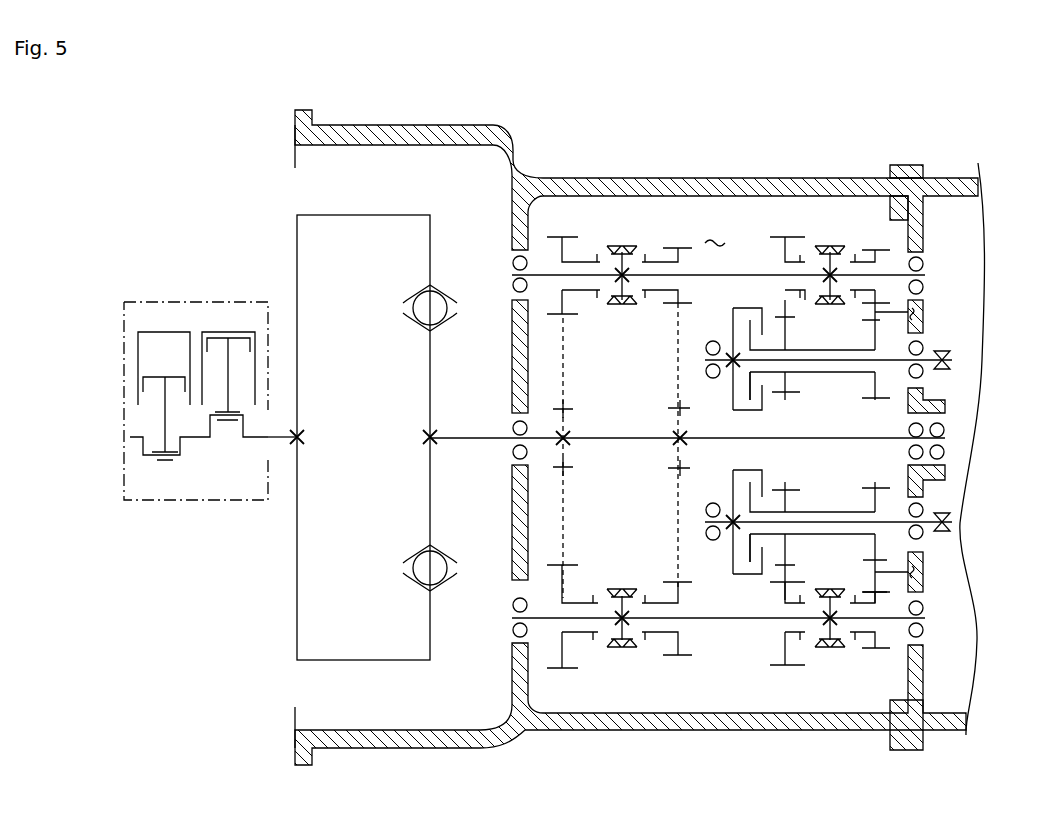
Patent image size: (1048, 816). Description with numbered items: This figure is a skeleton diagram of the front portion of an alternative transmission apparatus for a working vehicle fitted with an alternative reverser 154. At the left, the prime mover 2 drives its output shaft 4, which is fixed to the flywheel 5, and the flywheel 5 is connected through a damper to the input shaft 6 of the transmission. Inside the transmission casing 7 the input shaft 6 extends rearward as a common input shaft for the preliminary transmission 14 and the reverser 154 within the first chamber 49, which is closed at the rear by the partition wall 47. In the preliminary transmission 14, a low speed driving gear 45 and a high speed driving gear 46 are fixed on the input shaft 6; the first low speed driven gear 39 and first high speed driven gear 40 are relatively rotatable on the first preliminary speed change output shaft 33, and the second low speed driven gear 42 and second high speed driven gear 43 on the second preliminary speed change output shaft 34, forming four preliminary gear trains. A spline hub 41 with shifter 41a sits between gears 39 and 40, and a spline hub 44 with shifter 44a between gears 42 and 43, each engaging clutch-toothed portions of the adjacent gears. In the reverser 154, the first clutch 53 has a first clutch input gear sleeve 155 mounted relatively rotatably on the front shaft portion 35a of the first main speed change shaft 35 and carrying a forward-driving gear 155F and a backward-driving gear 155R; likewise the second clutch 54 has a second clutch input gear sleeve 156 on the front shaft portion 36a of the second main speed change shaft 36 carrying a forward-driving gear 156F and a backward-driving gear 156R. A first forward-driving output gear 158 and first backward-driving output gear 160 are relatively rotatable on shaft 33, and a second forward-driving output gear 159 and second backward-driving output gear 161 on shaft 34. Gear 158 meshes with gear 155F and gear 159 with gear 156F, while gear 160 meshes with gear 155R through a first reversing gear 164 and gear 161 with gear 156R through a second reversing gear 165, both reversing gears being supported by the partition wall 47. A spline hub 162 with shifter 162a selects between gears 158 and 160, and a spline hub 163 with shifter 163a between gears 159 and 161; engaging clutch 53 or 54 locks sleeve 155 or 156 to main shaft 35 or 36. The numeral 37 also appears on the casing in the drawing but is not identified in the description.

The prime mover 2 is at (253, 302).
The output shaft 4 is at (274, 440).
The flywheel 5 is at (407, 215).
The input shaft 6 is at (468, 440).
The transmission casing 7 is at (968, 180).
The preliminary transmission 14 is at (652, 225).
The first preliminary speed change output shaft 33 is at (545, 276).
The second preliminary speed change output shaft 34 is at (545, 618).
The first main speed change shaft 35 is at (697, 361).
The front shaft portion 35a is at (950, 357).
The second main speed change shaft 36 is at (697, 524).
The front shaft portion 36a is at (950, 528).
The bearing support 37 is at (966, 440).
The first low speed driven gear 39 is at (572, 237).
The first high speed driven gear 40 is at (688, 248).
The spline hub 41 is at (620, 268).
The shifter 41a is at (630, 247).
The second low speed driven gear 42 is at (558, 668).
The second high speed driven gear 43 is at (672, 655).
The spline hub 44 is at (620, 610).
The shifter 44a is at (628, 590).
The low speed driving gear 45 is at (570, 416).
The high speed driving gear 46 is at (668, 408).
The partition wall 47 is at (925, 680).
The first chamber 49 is at (715, 228).
The first clutch 53 is at (751, 301).
The second clutch 54 is at (752, 595).
The reverser 154 is at (876, 200).
The first clutch input gear sleeve 155 is at (753, 407).
The forward-driving gear 155F is at (800, 366).
The backward-driving gear 155R is at (869, 361).
The second clutch input gear sleeve 156 is at (751, 498).
The forward-driving gear 156F is at (801, 522).
The backward-driving gear 156R is at (871, 523).
The first forward-driving output gear 158 is at (780, 237).
The second forward-driving output gear 159 is at (784, 666).
The first backward-driving output gear 160 is at (875, 250).
The second backward-driving output gear 161 is at (870, 648).
The spline hub 162 is at (828, 268).
The shifter 162a is at (833, 247).
The spline hub 163 is at (830, 610).
The shifter 163a is at (835, 590).
The first reversing gear 164 is at (888, 318).
The second reversing gear 165 is at (875, 572).